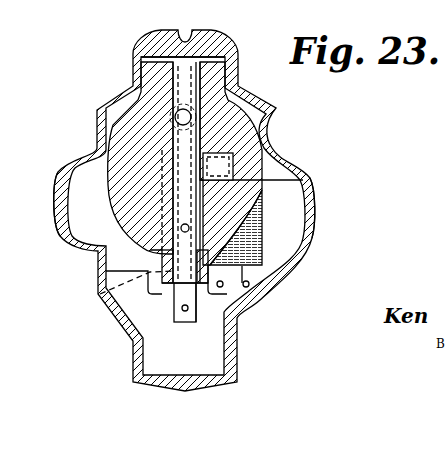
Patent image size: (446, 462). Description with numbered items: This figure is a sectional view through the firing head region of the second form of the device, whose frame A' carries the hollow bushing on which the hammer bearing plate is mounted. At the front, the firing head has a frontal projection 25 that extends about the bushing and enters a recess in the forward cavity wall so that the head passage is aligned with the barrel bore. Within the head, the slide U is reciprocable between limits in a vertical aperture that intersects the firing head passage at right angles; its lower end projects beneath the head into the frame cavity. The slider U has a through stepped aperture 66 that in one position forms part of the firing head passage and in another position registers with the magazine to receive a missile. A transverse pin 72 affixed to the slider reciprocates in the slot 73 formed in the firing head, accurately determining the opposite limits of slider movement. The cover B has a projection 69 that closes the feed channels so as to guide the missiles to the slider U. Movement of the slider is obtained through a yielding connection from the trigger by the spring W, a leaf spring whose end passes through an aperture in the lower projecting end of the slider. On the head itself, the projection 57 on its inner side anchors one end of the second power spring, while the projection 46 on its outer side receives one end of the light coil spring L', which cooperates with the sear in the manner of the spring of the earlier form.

The frontal projection 25 is at (262, 110).
The stepped aperture 66 is at (181, 117).
The projection 69 is at (222, 170).
The transverse pin 72 is at (181, 230).
The slot 73 is at (97, 297).
The projection 57 is at (133, 305).
The projection 46 is at (245, 284).
The spring W is at (185, 311).
The slide U is at (215, 208).
The frame A' is at (43, 198).
The cover B is at (322, 190).
The light coil spring L' is at (275, 277).